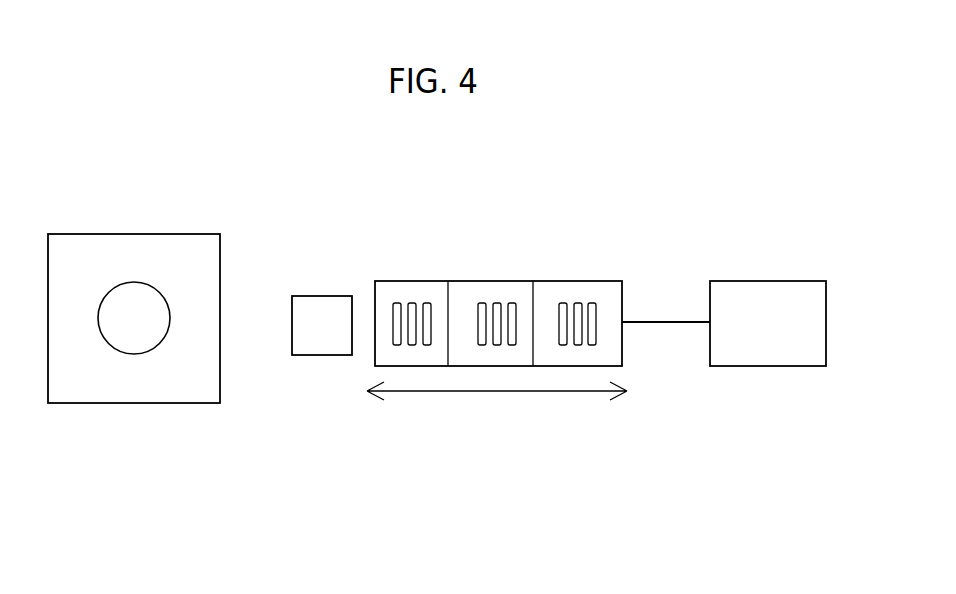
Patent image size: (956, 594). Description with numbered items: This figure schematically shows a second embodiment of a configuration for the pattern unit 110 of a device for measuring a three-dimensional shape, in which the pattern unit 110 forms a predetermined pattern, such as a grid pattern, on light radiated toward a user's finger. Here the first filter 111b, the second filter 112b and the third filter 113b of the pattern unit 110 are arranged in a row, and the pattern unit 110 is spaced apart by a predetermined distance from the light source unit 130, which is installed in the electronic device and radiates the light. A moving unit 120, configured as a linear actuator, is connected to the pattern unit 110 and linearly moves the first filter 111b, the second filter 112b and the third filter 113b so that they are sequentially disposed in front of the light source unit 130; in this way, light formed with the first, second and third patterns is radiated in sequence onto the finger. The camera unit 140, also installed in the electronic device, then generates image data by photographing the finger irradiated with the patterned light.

The pattern unit 110 is at (498, 251).
The first filter 111b is at (410, 281).
The second filter 112b is at (494, 281).
The third filter 113b is at (582, 272).
The moving unit 120 is at (766, 366).
The light source unit 130 is at (318, 355).
The camera unit 140 is at (134, 403).